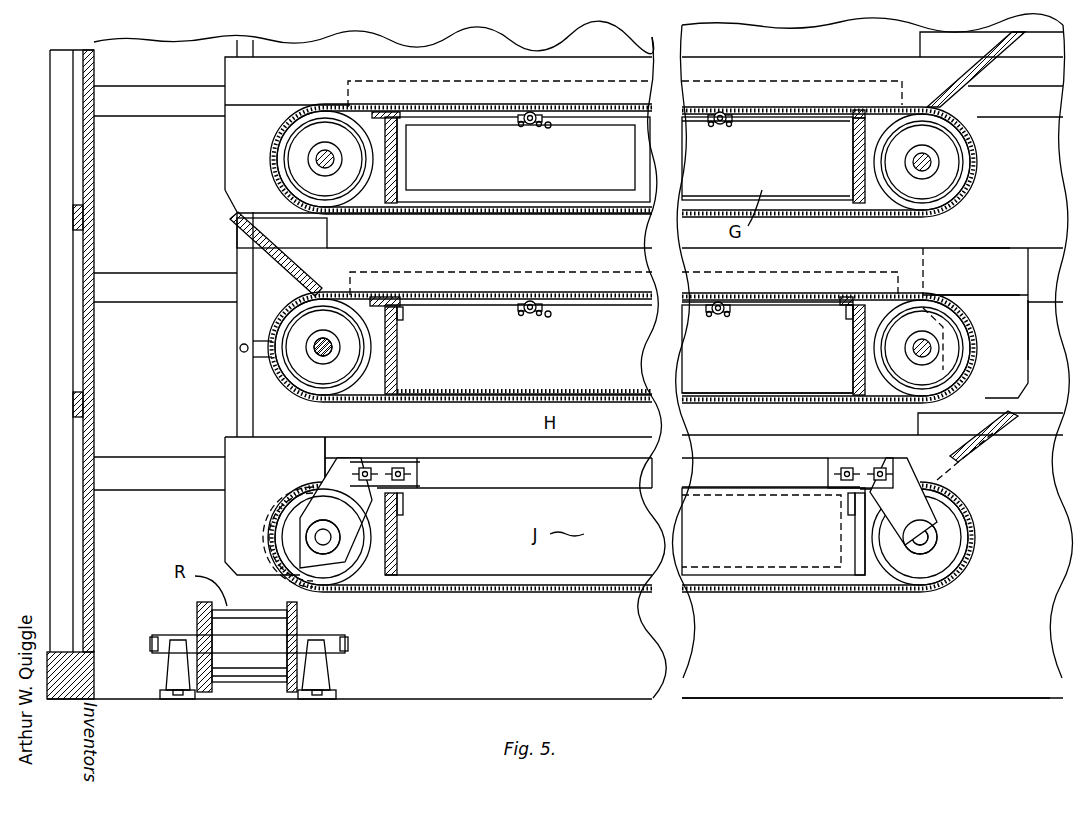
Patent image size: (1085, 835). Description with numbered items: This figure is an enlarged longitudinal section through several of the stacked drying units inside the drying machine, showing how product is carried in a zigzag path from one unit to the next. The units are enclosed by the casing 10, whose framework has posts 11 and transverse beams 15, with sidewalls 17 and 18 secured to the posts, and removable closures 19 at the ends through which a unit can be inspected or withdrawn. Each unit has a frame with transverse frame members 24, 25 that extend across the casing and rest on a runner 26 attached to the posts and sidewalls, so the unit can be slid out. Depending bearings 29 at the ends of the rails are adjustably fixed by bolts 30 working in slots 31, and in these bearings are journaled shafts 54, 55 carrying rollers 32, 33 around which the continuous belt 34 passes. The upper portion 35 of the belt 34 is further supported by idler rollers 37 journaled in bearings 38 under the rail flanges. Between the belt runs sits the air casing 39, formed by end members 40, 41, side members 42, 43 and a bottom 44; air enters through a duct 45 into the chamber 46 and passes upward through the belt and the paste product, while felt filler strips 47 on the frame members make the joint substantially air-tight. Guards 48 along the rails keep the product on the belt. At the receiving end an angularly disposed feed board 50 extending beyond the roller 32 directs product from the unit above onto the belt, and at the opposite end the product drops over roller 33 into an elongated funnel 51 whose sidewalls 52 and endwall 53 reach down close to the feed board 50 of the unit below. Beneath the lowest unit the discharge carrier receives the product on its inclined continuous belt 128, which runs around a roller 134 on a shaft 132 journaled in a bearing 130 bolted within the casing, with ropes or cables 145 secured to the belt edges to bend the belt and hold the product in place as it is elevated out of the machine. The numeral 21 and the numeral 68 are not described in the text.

The casing 10 is at (83, 76).
The posts 11 is at (55, 273).
The transverse beam 15 is at (70, 668).
The sidewall 17 is at (108, 137).
The sidewall 18 is at (936, 678).
The removable closures 19 is at (84, 172).
The lower tray 21 is at (850, 490).
The transverse frame member 24 is at (848, 314).
The transverse frame member 25 is at (404, 315).
The runner 26 is at (167, 108).
The depending bearings 29 is at (342, 510).
The bolts 30 is at (394, 460).
The slots 31 is at (412, 474).
The roller 32 is at (298, 362).
The roller 33 is at (333, 567).
The continuous belt 34 is at (510, 405).
The upper portion of belt 35 is at (768, 305).
The idler rollers 37 is at (527, 126).
The bearings 38 is at (549, 128).
The casing 39 is at (730, 386).
The end member 40 is at (858, 374).
The end member 41 is at (398, 364).
The side member 42 is at (578, 560).
The side member 43 is at (818, 303).
The bottom 44 is at (592, 394).
The duct 45 is at (600, 195).
The chamber 46 is at (794, 163).
The felt filler strips 47 is at (395, 300).
The guards 48 is at (985, 248).
The feed board 50 is at (232, 230).
The funnel 51 is at (225, 518).
The sidewalls of funnel 52 is at (978, 310).
The endwall of funnel 53 is at (1028, 328).
The shaft 54 is at (317, 358).
The shaft 55 is at (330, 548).
The pivot 68 is at (238, 358).
The inclined continuous belt 128 is at (253, 662).
The bearing 130 is at (166, 656).
The shaft 132 is at (348, 641).
The roller 134 is at (298, 666).
The ropes or cables 145 is at (200, 607).